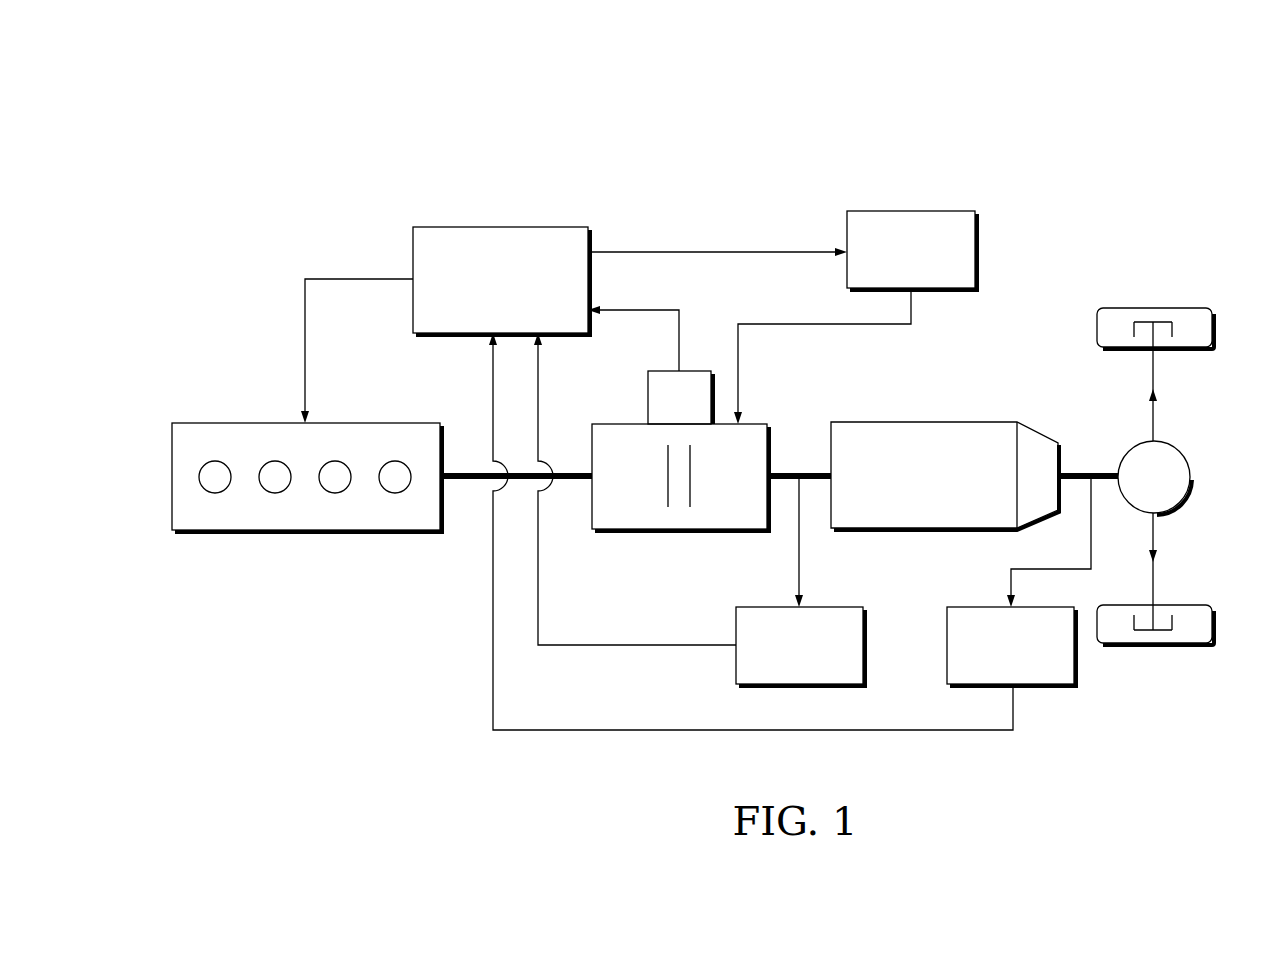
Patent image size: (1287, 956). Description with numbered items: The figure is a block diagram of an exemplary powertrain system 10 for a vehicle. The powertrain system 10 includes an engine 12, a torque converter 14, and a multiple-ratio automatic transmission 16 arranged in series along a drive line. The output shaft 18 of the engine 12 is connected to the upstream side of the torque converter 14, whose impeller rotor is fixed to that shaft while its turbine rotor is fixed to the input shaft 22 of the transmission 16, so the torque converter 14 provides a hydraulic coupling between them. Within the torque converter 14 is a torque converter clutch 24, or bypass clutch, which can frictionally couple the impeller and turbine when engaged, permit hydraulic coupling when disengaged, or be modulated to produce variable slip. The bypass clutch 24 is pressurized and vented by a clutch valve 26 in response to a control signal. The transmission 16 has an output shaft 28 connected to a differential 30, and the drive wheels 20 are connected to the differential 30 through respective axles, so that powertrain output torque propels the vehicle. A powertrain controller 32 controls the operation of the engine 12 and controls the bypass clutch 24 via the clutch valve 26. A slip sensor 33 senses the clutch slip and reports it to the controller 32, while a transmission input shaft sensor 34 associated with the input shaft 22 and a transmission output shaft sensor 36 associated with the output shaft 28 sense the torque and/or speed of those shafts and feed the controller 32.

The powertrain system 10 is at (1008, 99).
The engine 12 is at (242, 423).
The torque converter 14 is at (643, 530).
The multiple-ratio automatic transmission 16 is at (932, 422).
The output shaft 18 is at (480, 470).
The drive wheels 20 is at (1187, 308).
The input shaft 22 is at (818, 474).
The torque converter clutch 24 is at (690, 490).
The clutch valve 26 is at (977, 249).
The output shaft 28 is at (1105, 470).
The differential 30 is at (1190, 480).
The powertrain controller 32 is at (502, 227).
The slip sensor 33 is at (650, 342).
The transmission input shaft sensor 34 is at (828, 607).
The transmission output shaft sensor 36 is at (983, 607).